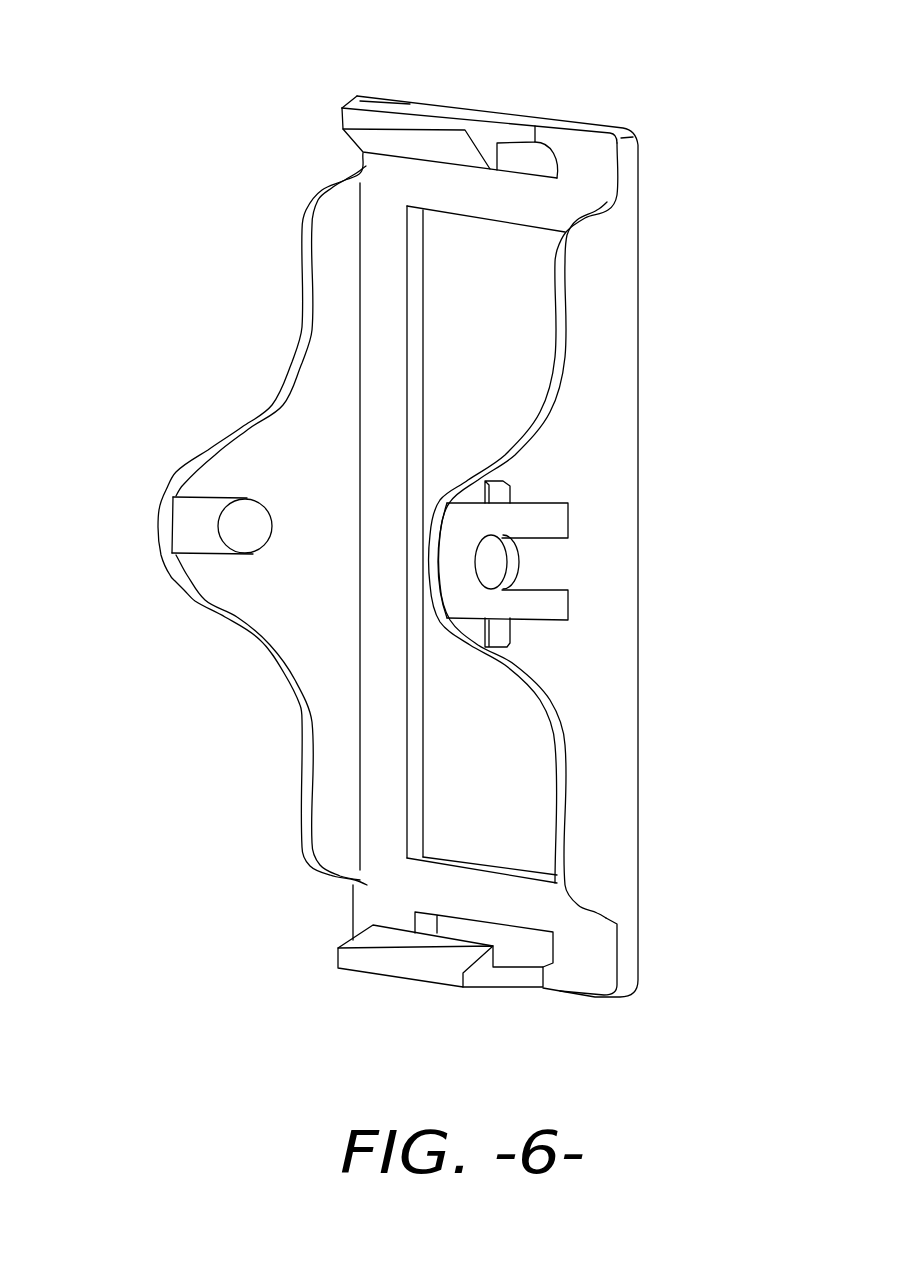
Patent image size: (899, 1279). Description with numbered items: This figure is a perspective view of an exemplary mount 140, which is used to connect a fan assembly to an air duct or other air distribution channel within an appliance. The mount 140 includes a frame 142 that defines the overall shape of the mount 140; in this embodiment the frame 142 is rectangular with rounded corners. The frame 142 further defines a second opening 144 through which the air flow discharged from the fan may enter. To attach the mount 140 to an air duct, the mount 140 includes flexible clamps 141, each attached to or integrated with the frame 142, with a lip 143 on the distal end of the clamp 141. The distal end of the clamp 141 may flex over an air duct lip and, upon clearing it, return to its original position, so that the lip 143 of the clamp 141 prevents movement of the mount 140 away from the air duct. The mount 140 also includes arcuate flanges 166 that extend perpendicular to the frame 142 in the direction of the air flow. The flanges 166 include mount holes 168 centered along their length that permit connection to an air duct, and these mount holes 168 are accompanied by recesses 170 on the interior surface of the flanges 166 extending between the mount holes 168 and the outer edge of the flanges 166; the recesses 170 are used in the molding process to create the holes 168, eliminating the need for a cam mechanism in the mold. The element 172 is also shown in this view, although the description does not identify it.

The mount 140 is at (684, 202).
The flexible clamp 141 is at (427, 130).
The frame 142 is at (581, 997).
The lip 143 is at (455, 168).
The second opening 144 is at (473, 737).
The arcuate flange 166 is at (228, 470).
The mount hole 168 is at (249, 535).
The recess 170 is at (178, 523).
The bracket 172 is at (547, 607).